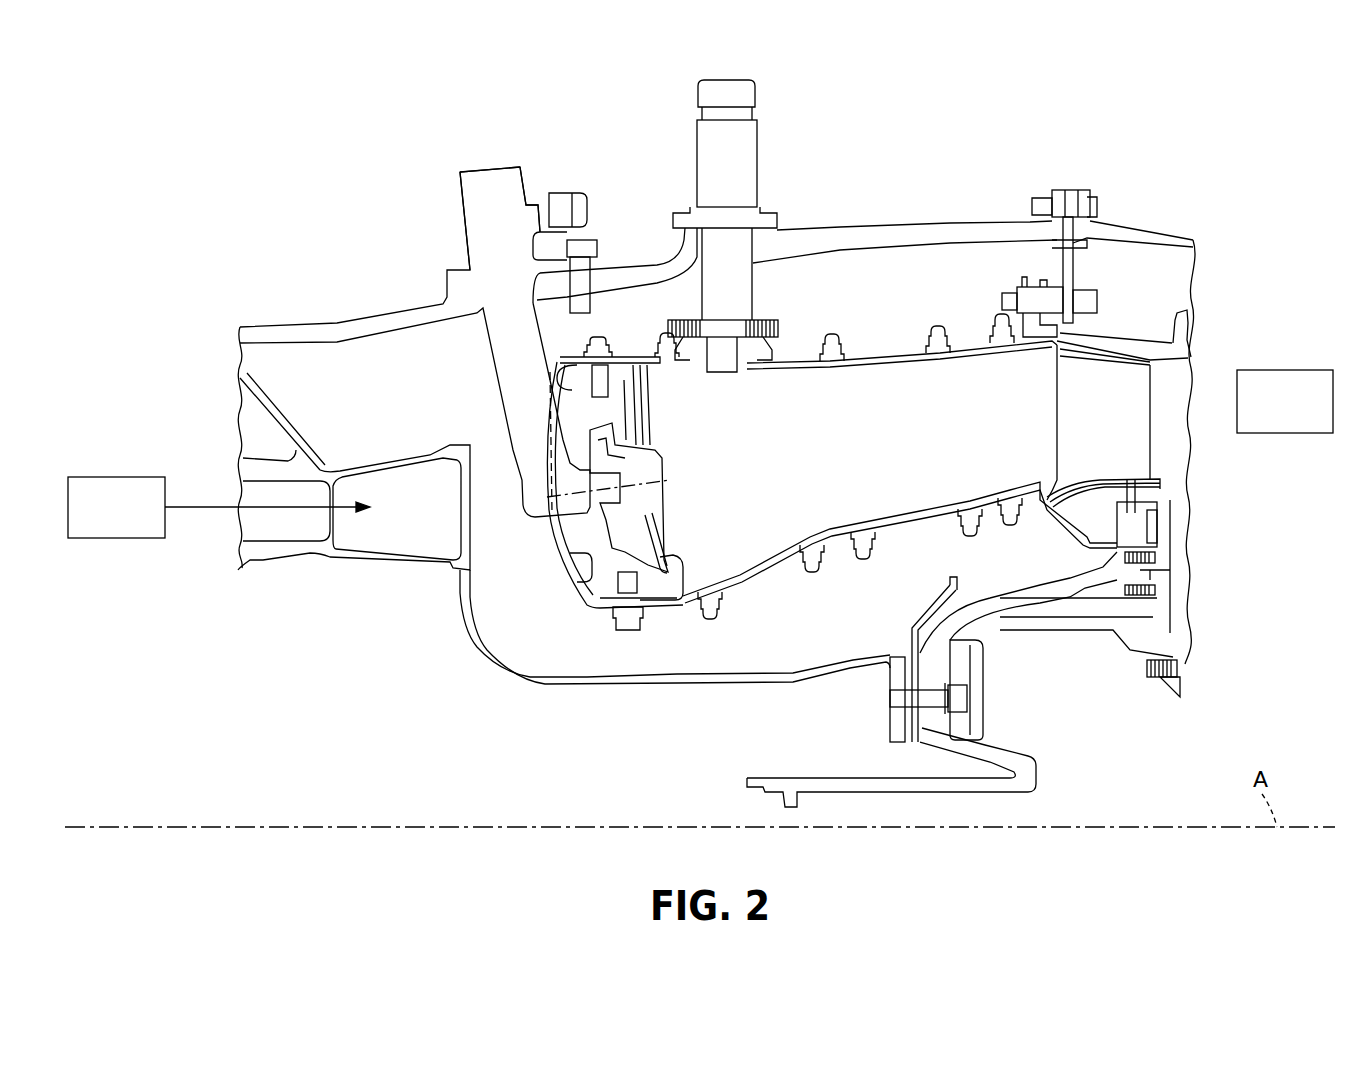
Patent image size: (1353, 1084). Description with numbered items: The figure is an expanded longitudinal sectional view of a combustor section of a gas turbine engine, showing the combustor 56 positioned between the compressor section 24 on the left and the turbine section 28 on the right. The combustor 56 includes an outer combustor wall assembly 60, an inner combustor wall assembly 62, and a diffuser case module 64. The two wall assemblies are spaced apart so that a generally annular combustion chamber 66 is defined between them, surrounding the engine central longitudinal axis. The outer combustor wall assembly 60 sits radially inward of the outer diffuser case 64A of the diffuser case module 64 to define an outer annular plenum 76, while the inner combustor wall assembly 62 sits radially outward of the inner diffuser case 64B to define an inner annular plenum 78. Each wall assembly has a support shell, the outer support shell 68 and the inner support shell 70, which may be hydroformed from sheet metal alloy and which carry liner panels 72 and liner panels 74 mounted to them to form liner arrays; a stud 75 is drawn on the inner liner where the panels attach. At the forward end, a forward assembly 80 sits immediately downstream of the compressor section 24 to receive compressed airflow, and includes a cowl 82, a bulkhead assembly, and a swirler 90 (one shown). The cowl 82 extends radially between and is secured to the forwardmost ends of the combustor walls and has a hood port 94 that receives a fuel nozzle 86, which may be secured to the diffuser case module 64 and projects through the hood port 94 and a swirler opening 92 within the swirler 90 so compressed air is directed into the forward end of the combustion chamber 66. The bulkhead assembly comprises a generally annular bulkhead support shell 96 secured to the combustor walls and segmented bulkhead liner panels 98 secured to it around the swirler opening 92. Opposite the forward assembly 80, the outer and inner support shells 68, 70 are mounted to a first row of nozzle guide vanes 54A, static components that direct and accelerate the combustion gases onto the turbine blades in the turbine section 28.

The compressor section 24 is at (105, 519).
The turbine section 28 is at (1273, 413).
The Nozzle Guide Vanes 54A is at (1085, 428).
The combustor 56 is at (998, 188).
The outer combustor wall assembly 60 is at (900, 335).
The inner combustor wall assembly 62 is at (843, 565).
The diffuser case module 64 is at (905, 218).
The outer diffuser case 64A is at (880, 232).
The inner diffuser case 64B is at (680, 684).
The combustion chamber 66 is at (846, 444).
The outer support shell 68 is at (876, 358).
The inner support shell 70 is at (917, 528).
The liner panels 72 is at (765, 368).
The liner panels 74 is at (805, 546).
The stud 75 is at (1012, 527).
The outer annular plenum 76 is at (788, 296).
The inner annular plenum 78 is at (745, 654).
The forward assembly 80 is at (568, 613).
The cowl 82 is at (570, 585).
The fuel nozzle 86 is at (491, 269).
The swirler 90 is at (665, 515).
The swirler opening 92 is at (655, 465).
The hood port 94 is at (570, 560).
The bulkhead support shell 96 is at (600, 590).
The bulkhead liner panels 98 is at (652, 547).